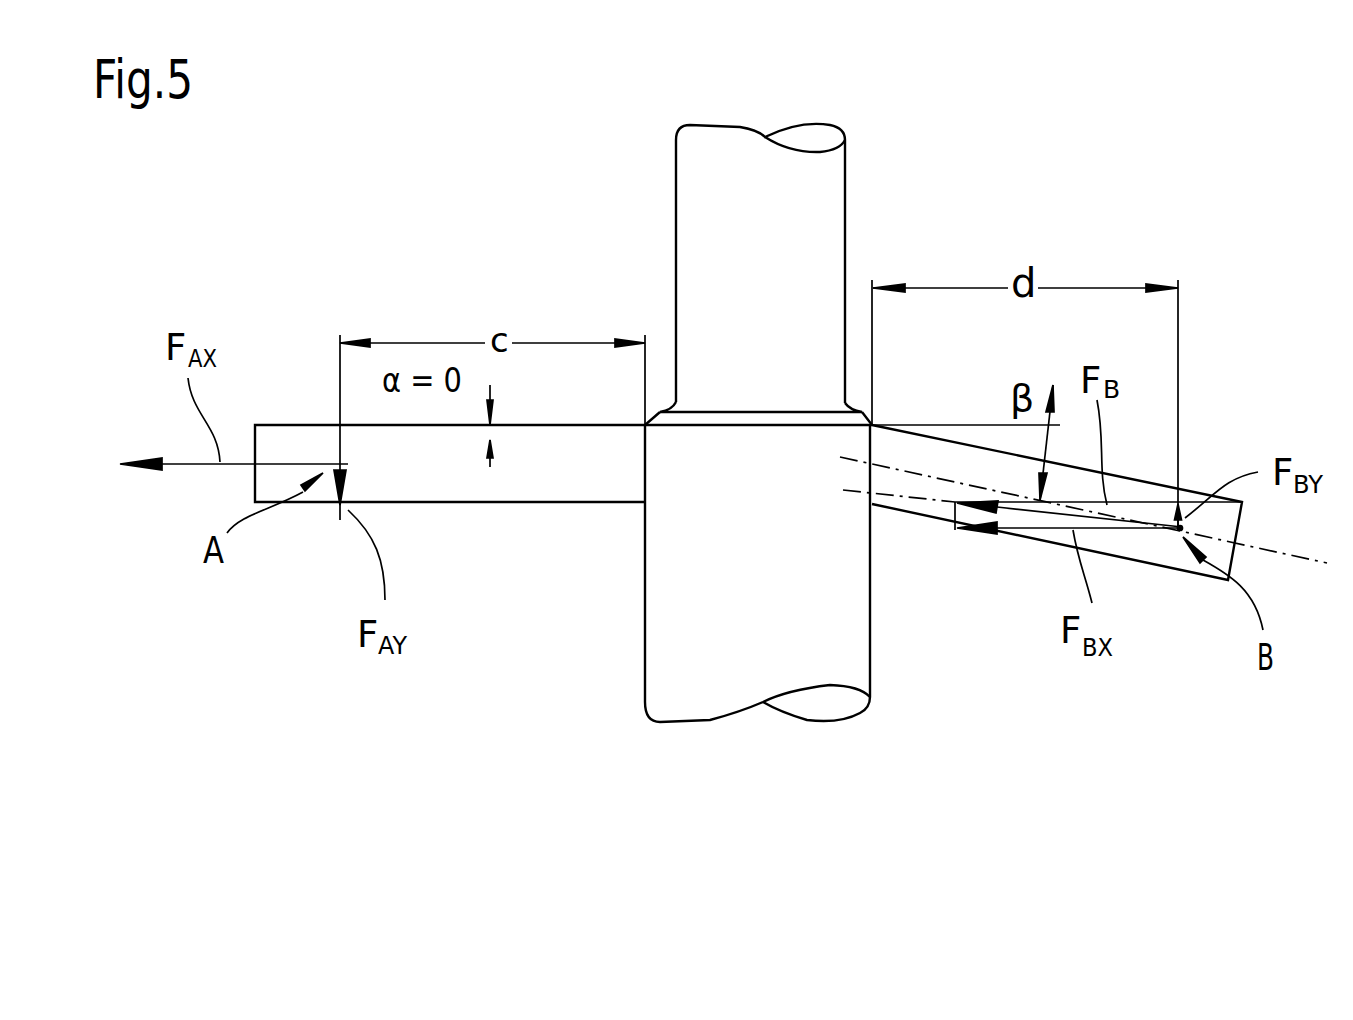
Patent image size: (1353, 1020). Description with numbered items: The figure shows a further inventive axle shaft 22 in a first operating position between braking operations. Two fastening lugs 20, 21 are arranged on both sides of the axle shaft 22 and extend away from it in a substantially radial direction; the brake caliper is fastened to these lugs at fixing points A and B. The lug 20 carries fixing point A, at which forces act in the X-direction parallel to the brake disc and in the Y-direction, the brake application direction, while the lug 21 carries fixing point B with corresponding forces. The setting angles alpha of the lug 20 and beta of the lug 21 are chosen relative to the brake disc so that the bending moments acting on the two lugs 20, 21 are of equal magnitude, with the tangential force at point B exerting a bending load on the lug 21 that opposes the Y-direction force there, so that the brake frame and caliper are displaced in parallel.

The fastening lug 20 is at (442, 488).
The fastening lug 21 is at (1143, 530).
The axle shaft 22 is at (817, 667).